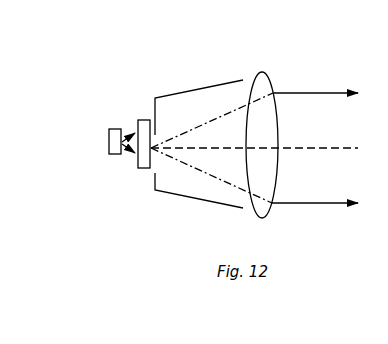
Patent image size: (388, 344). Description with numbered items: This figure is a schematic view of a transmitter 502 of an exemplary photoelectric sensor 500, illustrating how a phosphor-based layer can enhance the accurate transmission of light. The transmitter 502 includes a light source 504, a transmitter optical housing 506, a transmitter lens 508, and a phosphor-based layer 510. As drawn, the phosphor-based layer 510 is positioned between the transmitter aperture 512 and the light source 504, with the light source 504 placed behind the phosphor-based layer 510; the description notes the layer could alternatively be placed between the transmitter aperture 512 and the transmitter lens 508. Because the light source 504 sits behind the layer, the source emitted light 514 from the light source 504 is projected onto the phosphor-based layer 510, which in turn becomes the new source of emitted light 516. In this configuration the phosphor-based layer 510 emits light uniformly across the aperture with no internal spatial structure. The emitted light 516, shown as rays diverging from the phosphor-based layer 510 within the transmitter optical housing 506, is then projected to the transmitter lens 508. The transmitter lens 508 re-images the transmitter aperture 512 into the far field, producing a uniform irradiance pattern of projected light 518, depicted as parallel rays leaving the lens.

The photoelectric sensor 500 is at (97, 95).
The transmitter 502 is at (137, 218).
The light source 504 is at (109, 140).
The transmitter optical housing 506 is at (207, 88).
The transmitter lens 508 is at (268, 212).
The phosphor-based layer 510 is at (143, 120).
The transmitter aperture 512 is at (154, 157).
The source emitted light 514 is at (134, 131).
The emitted light 516 is at (199, 124).
The projected light 518 is at (318, 93).